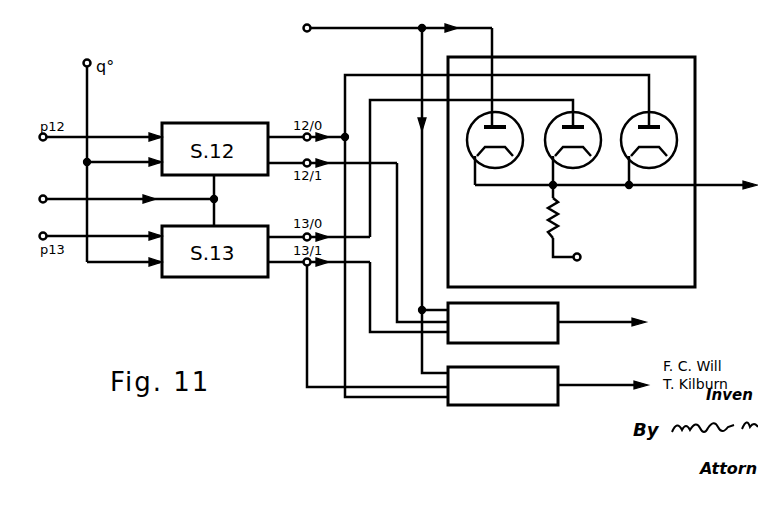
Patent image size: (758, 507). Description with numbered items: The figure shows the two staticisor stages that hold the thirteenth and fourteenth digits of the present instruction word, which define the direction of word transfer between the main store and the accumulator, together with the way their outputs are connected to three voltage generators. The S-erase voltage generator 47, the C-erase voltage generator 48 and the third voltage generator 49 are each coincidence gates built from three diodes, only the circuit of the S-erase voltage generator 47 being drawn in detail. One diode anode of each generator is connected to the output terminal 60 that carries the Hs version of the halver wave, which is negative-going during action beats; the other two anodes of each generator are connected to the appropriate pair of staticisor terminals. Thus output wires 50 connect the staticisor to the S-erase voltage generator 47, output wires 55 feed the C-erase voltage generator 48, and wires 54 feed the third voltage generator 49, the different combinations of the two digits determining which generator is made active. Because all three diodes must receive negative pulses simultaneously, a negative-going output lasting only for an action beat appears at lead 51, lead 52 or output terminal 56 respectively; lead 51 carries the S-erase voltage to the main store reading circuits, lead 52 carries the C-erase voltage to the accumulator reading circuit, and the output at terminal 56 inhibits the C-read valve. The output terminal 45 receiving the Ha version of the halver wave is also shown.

The output terminal 45 is at (44, 198).
The S-erase voltage generator 47 is at (657, 57).
The C-erase voltage generator 48 is at (505, 290).
The third voltage generator 49 is at (502, 352).
The output wires 50 is at (345, 108).
The lead 51 is at (706, 183).
The lead 52 is at (613, 321).
The wires 54 is at (307, 345).
The output wires 55 is at (412, 336).
The output terminal 56 is at (614, 384).
The output terminal 60 is at (377, 156).